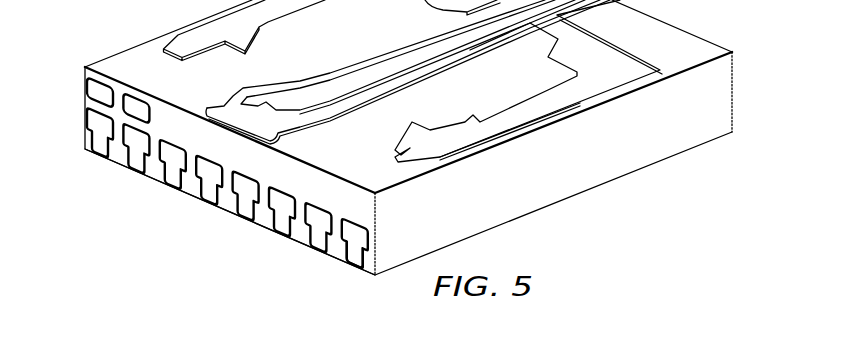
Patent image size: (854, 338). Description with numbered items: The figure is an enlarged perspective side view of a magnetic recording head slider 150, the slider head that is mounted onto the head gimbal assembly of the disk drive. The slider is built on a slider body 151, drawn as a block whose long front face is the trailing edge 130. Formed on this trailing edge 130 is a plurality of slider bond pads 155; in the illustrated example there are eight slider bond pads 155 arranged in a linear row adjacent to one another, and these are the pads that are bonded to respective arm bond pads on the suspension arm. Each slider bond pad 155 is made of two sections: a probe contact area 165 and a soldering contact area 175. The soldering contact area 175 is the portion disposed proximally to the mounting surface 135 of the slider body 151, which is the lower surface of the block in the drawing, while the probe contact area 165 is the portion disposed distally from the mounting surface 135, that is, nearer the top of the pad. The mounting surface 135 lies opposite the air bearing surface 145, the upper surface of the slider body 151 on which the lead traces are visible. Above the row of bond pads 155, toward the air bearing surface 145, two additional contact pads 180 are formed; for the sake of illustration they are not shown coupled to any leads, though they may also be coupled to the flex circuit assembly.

The trailing edge 130 is at (333, 190).
The mounting surface 135 is at (261, 226).
The air bearing surface 145 is at (137, 58).
The magnetic recording head slider 150 is at (596, 187).
The slider body 151 is at (720, 90).
The slider bond pads 155 is at (210, 182).
The probe contact area 165 is at (357, 237).
The soldering contact area 175 is at (355, 256).
The contact pads 180 is at (100, 92).